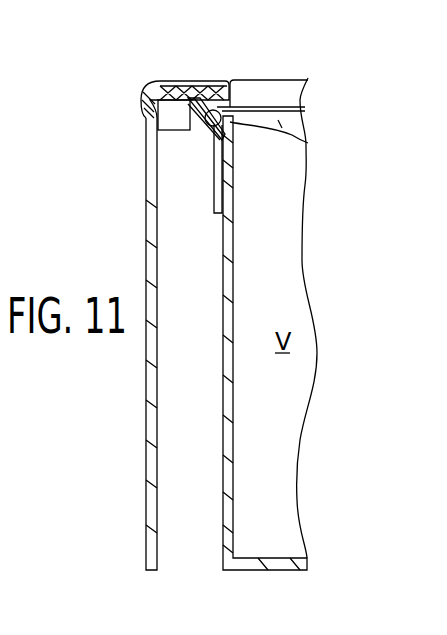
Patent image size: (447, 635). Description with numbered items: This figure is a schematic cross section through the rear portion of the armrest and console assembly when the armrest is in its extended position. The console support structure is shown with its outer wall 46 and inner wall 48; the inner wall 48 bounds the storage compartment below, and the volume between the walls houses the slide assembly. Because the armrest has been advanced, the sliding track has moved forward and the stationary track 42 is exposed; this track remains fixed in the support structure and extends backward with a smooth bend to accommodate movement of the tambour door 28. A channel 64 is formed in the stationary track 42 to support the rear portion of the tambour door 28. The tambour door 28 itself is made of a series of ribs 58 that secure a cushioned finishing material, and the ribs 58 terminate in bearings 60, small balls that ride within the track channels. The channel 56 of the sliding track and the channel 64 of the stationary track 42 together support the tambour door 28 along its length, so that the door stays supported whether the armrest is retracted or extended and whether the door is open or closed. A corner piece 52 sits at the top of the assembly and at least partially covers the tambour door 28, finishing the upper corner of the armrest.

The tambour door 28 is at (263, 93).
The stationary track 42 is at (233, 157).
The outer wall 46 is at (145, 548).
The inner wall 48 is at (223, 523).
The corner piece 52 is at (148, 92).
The channel 56 is at (187, 97).
The ribs 58 is at (308, 143).
The bearings 60 is at (211, 106).
The channel 64 is at (187, 130).